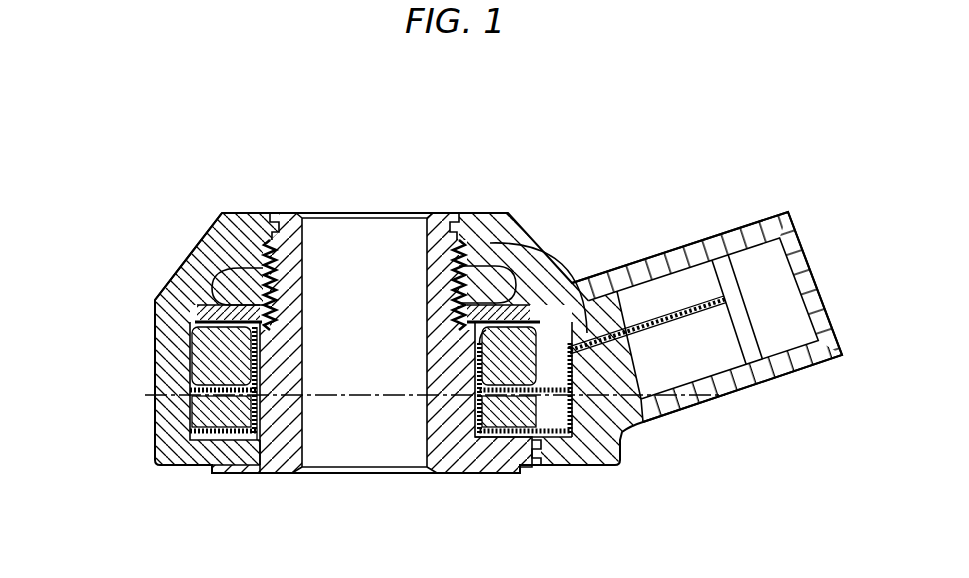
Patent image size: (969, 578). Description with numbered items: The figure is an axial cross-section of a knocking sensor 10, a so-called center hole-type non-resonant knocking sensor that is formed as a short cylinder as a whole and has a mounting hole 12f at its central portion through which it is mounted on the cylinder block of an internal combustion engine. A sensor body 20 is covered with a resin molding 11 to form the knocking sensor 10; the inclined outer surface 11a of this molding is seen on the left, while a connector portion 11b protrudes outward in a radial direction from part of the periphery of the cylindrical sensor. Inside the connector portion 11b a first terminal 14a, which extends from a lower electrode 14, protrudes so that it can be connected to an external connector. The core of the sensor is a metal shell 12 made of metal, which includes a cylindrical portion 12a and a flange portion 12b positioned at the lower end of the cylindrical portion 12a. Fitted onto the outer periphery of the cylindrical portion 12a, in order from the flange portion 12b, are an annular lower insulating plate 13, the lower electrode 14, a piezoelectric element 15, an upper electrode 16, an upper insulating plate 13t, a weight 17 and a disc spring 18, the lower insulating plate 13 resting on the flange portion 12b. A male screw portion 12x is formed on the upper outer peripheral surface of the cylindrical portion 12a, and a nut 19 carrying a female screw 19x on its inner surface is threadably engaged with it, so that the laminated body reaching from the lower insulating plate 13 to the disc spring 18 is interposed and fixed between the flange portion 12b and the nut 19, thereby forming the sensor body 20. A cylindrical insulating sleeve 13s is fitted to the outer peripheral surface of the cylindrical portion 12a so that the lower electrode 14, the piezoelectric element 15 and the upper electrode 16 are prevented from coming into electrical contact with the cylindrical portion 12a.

The knocking sensor 10 is at (641, 157).
The resin molding 11 is at (512, 212).
The inclined surface of housing 11a is at (165, 290).
The connector portion 11b is at (763, 220).
The metal shell 12 is at (507, 458).
The cylindrical portion 12a is at (276, 212).
The flange portion 12b is at (233, 472).
The mounting hole 12f is at (312, 465).
The male screw portion 12x is at (472, 243).
The lower insulating plate 13 is at (190, 434).
The upper insulating plate 13t is at (190, 360).
The insulating sleeve 13s is at (262, 445).
The lower electrode 14 is at (562, 463).
The first terminal 14a is at (742, 276).
The piezoelectric element 15 is at (191, 411).
The upper electrode 16 is at (634, 414).
The weight 17 is at (570, 332).
The disc spring 18 is at (163, 284).
The nut 19 is at (226, 268).
The internal thread of nut 19x is at (284, 283).
The sensor body 20 is at (130, 327).